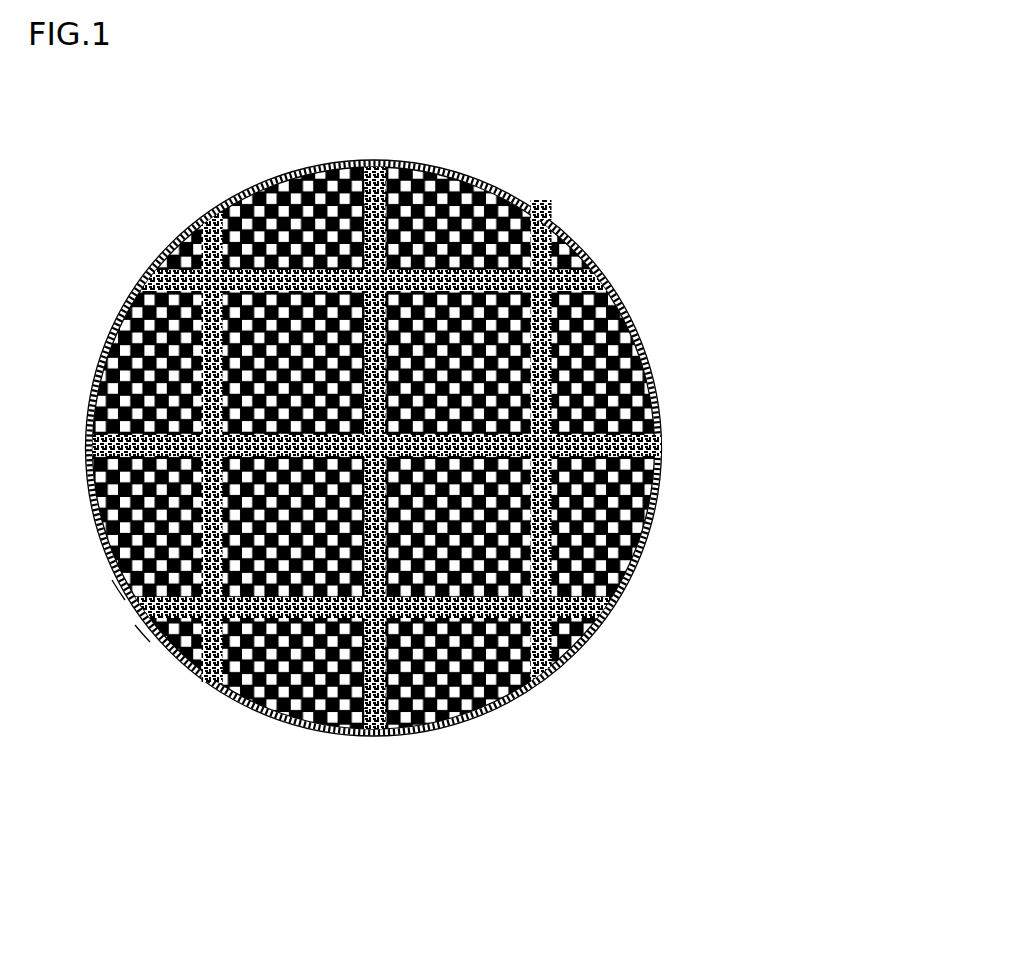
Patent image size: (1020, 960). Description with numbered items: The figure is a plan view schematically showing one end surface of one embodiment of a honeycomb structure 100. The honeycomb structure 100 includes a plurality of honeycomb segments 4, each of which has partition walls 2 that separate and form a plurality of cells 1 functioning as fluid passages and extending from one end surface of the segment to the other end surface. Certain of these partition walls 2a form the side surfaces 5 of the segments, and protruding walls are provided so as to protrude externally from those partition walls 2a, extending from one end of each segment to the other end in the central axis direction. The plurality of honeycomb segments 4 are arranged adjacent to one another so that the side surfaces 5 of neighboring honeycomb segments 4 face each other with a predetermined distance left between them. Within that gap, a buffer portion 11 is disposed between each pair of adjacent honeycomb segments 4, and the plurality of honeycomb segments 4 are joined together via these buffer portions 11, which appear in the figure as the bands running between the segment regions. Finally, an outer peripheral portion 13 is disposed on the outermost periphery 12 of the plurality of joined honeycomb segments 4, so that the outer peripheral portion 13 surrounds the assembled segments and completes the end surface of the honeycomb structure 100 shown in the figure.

The honeycomb structure 100 is at (768, 107).
The cell 1 is at (465, 174).
The partition wall 2 is at (505, 190).
The partition wall forming side surface 2a is at (380, 163).
The honeycomb segment 4 is at (535, 275).
The side surface 5 is at (607, 608).
The buffer portion 11 is at (213, 207).
The outermost periphery 12 is at (157, 638).
The outer peripheral portion 13 is at (123, 592).